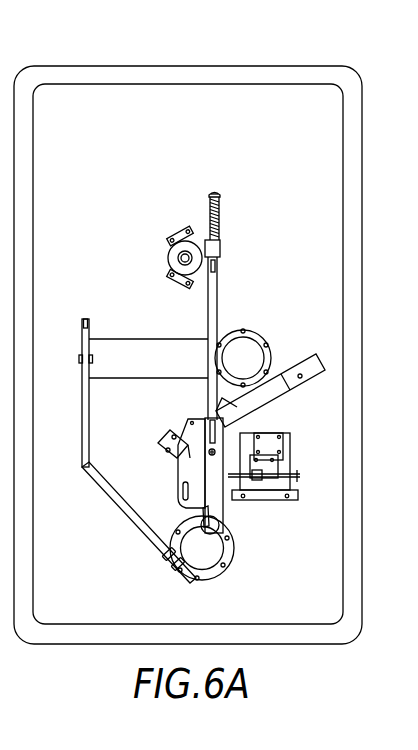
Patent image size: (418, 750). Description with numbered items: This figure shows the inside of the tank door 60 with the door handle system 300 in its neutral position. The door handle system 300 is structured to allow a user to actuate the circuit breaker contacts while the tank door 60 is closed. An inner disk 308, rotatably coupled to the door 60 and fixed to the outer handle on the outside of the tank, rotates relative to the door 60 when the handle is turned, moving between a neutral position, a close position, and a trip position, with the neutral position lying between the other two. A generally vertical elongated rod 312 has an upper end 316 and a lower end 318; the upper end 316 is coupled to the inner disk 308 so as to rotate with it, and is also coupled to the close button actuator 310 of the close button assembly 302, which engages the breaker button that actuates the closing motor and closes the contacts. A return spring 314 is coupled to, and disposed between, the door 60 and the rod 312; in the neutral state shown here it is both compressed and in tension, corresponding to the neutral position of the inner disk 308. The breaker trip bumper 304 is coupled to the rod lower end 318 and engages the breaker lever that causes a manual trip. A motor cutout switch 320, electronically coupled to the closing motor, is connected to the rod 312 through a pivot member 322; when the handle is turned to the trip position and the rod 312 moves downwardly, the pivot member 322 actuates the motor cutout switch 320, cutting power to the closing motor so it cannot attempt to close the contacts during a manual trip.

The door handle system 300 is at (57, 84).
The tank door 60 is at (107, 95).
The close button assembly 302 is at (221, 250).
The breaker trip bumper 304 is at (219, 522).
The inner disk 308 is at (167, 250).
The close button actuator 310 is at (219, 259).
The elongated rod 312 is at (208, 305).
The return spring 314 is at (210, 200).
The upper end 316 is at (220, 199).
The lower end 318 is at (196, 508).
The motor cutout switch 320 is at (280, 460).
The pivot member 322 is at (183, 467).